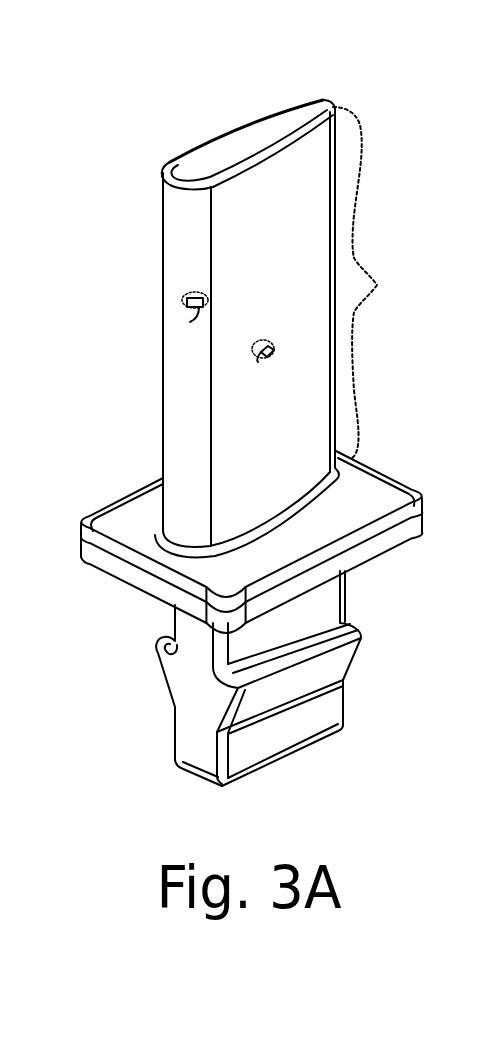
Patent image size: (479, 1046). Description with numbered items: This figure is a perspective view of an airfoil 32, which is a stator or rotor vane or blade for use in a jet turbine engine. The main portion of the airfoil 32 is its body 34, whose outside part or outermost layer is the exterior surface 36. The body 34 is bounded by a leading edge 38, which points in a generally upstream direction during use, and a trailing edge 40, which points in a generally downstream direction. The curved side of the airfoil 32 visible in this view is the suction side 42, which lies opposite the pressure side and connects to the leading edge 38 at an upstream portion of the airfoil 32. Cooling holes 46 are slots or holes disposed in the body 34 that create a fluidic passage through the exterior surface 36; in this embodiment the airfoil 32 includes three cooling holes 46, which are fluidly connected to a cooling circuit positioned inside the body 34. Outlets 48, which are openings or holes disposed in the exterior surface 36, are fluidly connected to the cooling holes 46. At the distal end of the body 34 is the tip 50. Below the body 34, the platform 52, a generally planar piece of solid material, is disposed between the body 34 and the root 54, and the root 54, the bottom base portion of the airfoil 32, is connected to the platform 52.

The airfoil 32 is at (323, 100).
The body 34 is at (378, 285).
The exterior surface 36 is at (275, 405).
The leading edge 38 is at (187, 236).
The trailing edge 40 is at (333, 168).
The suction side 42 is at (272, 260).
The cooling holes 46 is at (189, 297).
The outlets 48 is at (198, 308).
The tip 50 is at (222, 160).
The platform 52 is at (384, 494).
The root 54 is at (347, 620).